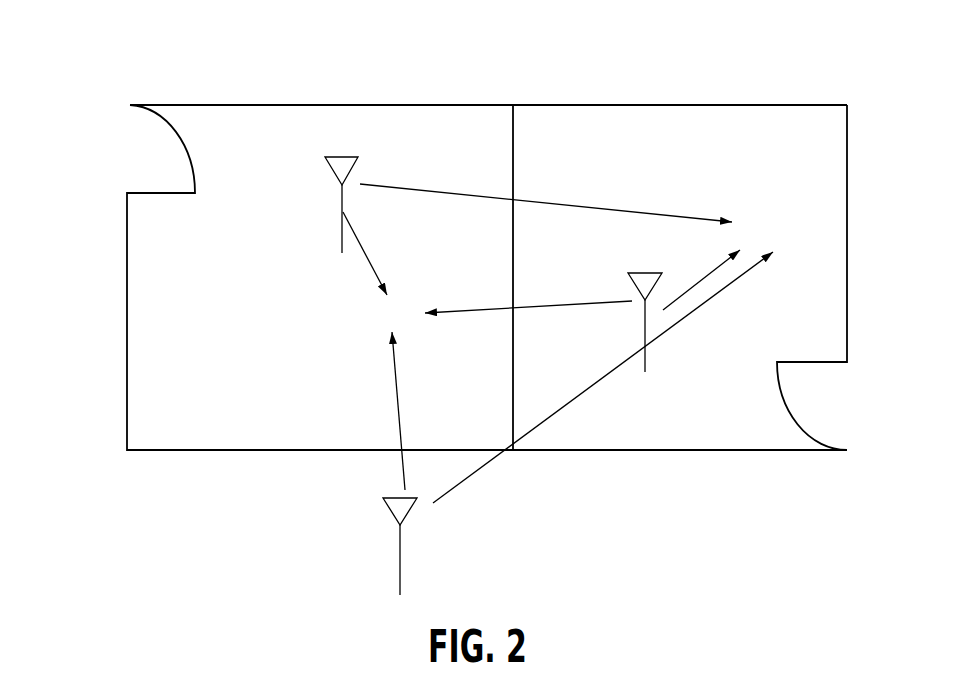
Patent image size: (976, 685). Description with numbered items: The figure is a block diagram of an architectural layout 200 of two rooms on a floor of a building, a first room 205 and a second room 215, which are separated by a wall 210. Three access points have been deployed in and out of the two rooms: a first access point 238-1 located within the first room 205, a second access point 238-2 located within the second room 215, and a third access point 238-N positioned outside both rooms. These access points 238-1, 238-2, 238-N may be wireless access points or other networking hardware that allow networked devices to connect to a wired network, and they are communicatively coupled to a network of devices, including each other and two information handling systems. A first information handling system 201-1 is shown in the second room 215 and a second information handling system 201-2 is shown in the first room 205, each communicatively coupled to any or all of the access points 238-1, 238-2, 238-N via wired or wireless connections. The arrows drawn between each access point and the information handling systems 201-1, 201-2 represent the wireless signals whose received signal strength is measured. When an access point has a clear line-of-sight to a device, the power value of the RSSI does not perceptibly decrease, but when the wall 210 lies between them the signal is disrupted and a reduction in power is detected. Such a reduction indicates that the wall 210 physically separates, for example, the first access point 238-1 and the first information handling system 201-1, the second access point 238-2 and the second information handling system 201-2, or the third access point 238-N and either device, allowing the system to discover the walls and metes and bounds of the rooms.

The architectural layout 200 is at (132, 48).
The first room 205 is at (330, 125).
The wall 210 is at (510, 103).
The second room 215 is at (712, 110).
The first access point 238-1 is at (340, 150).
The second access point 238-2 is at (645, 268).
The third access point 238-N is at (395, 494).
The first information handling system 201-1 is at (581, 343).
The second information handling system 201-2 is at (487, 351).